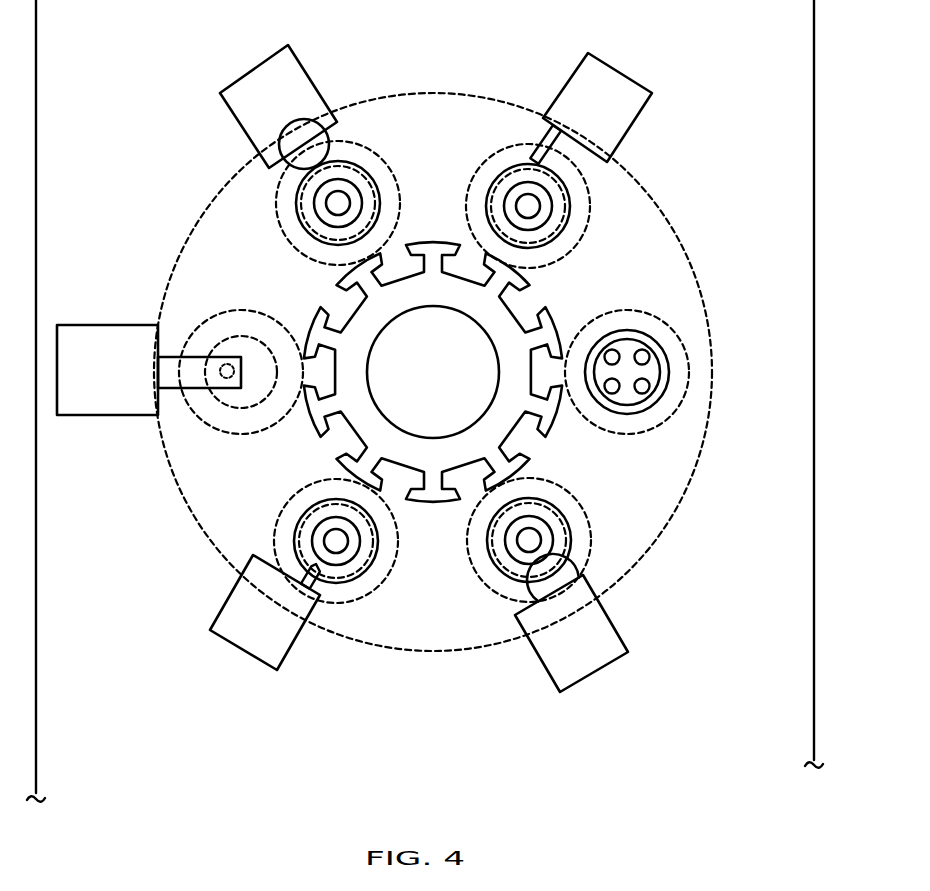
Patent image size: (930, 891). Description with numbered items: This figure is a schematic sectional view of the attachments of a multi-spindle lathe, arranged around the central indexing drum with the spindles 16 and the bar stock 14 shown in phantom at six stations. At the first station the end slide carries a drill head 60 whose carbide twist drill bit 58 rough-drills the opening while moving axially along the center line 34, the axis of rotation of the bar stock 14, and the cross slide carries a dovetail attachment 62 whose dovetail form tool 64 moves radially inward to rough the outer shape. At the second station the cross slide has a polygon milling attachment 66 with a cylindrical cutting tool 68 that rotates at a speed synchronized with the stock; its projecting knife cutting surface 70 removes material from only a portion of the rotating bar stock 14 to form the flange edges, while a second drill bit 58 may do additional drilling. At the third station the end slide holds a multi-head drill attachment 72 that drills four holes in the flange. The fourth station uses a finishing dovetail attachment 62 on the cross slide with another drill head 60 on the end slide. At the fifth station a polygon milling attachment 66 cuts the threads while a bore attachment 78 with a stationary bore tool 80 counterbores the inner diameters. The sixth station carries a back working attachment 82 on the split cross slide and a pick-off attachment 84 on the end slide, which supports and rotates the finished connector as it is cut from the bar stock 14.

The bar stock 14 is at (367, 178).
The spindles 16 is at (400, 192).
The center line 34 is at (337, 543).
The carbide twist drill bit 58 is at (538, 207).
The drill head 60 is at (533, 223).
The dovetail attachment 62 is at (642, 93).
The dovetail form tool 64 is at (550, 143).
The polygon milling attachment 66 is at (295, 72).
The cylindrical cutting tool 68 is at (287, 162).
The knife cutting surface 70 is at (527, 580).
The multi-head drill attachment 72 is at (643, 422).
The bore attachment 78 is at (322, 215).
The bore tool 80 is at (333, 217).
The back working attachment 82 is at (108, 407).
The pick-off attachment 84 is at (226, 380).